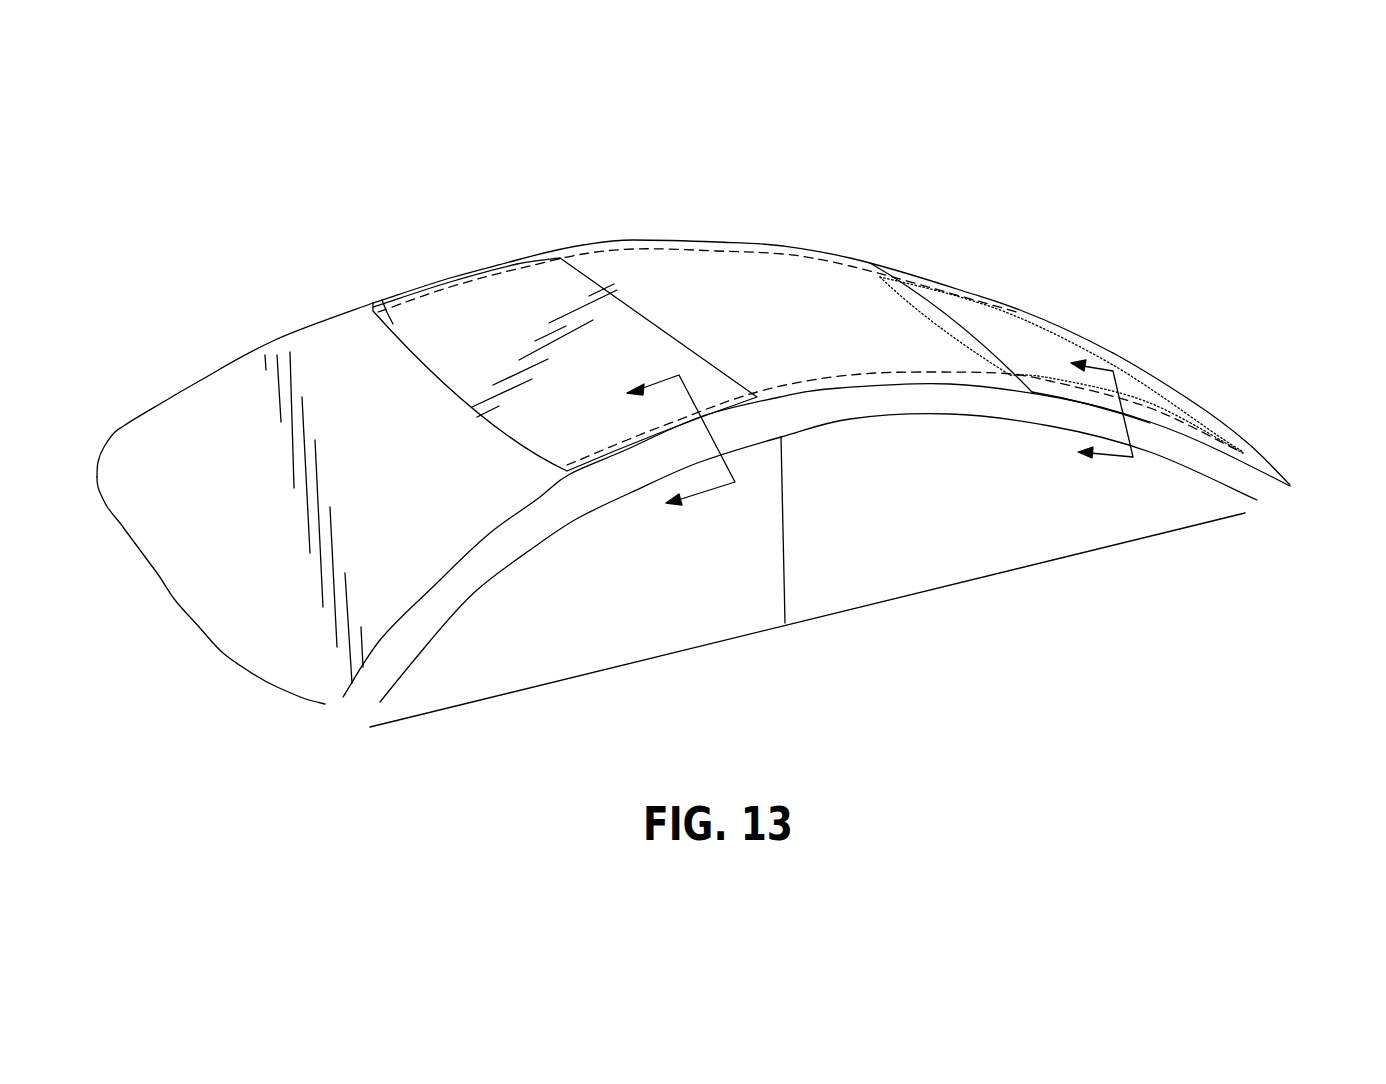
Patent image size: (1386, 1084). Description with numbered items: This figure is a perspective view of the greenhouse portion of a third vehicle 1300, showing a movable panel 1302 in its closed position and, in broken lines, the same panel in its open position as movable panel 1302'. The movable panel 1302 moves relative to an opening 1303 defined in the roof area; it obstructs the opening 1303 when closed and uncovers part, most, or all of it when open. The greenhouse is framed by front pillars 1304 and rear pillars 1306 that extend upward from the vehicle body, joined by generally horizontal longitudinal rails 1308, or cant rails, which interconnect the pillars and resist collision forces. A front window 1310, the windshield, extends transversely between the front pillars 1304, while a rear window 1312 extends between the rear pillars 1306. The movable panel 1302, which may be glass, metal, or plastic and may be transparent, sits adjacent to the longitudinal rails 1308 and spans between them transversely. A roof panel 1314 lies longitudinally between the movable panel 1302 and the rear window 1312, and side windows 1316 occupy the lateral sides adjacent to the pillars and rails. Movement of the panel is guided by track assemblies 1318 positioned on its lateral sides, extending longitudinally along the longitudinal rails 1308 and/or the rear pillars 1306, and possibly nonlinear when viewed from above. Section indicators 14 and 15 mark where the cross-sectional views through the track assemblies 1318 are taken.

The third vehicle 1300 is at (206, 233).
The movable panel 1302 is at (533, 364).
The movable panel in open position 1302' is at (1061, 365).
The opening 1303 is at (448, 283).
The front pillars 1304 is at (212, 373).
The rear pillars 1306 is at (940, 278).
The longitudinal rails 1308 is at (688, 240).
The front window 1310 is at (179, 590).
The rear window 1312 is at (1187, 398).
The roof panel 1314 is at (803, 253).
The side windows 1316 is at (655, 650).
The track assemblies 1318 is at (537, 256).
The section line for FIG. 14 is at (664, 451).
The section line for FIG. 15 is at (1089, 405).